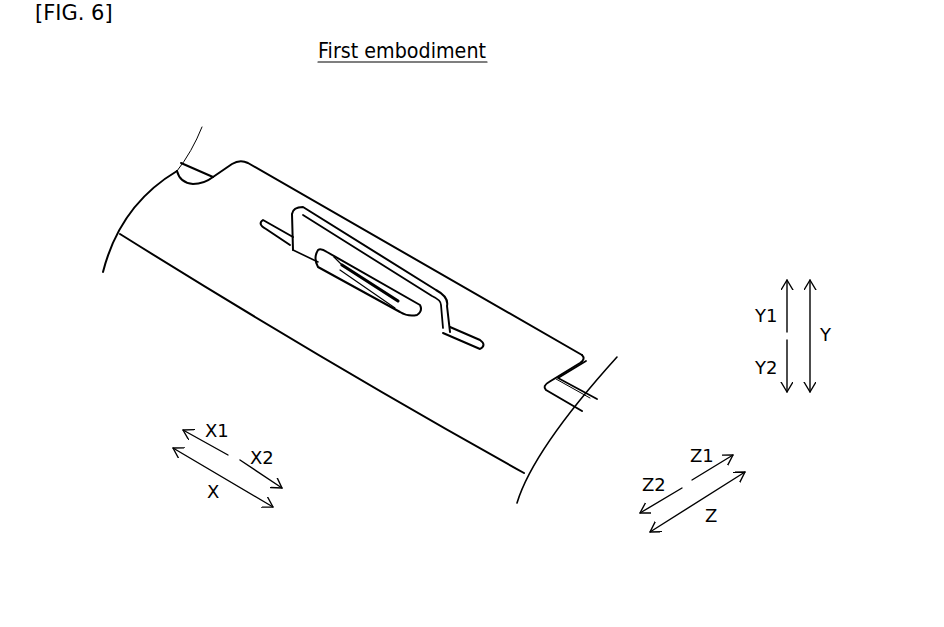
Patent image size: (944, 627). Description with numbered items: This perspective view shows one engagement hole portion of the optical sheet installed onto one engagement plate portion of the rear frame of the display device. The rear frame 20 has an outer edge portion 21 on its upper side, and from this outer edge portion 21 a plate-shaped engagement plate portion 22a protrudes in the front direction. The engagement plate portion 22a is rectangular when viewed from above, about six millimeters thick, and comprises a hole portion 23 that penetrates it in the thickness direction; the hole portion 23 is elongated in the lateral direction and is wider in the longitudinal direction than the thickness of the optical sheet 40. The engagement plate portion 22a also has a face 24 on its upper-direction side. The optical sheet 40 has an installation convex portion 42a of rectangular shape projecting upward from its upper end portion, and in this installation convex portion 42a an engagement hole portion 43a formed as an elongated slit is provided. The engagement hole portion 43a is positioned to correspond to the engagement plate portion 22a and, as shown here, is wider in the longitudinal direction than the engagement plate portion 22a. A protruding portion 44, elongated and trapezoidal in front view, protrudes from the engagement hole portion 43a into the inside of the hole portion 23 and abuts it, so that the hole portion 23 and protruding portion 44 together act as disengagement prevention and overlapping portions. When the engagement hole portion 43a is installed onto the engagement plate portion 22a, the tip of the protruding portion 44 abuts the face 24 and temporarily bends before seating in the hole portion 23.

The rear frame 20 is at (185, 166).
The outer edge portion 21 is at (581, 410).
The engagement plate portion 22a is at (420, 295).
The hole portion 23 is at (318, 262).
The face 24 is at (297, 212).
The optical sheet 40 is at (187, 235).
The installation convex portion 42a is at (560, 357).
The engagement hole portion 43a is at (463, 327).
The protruding portion 44 is at (368, 283).